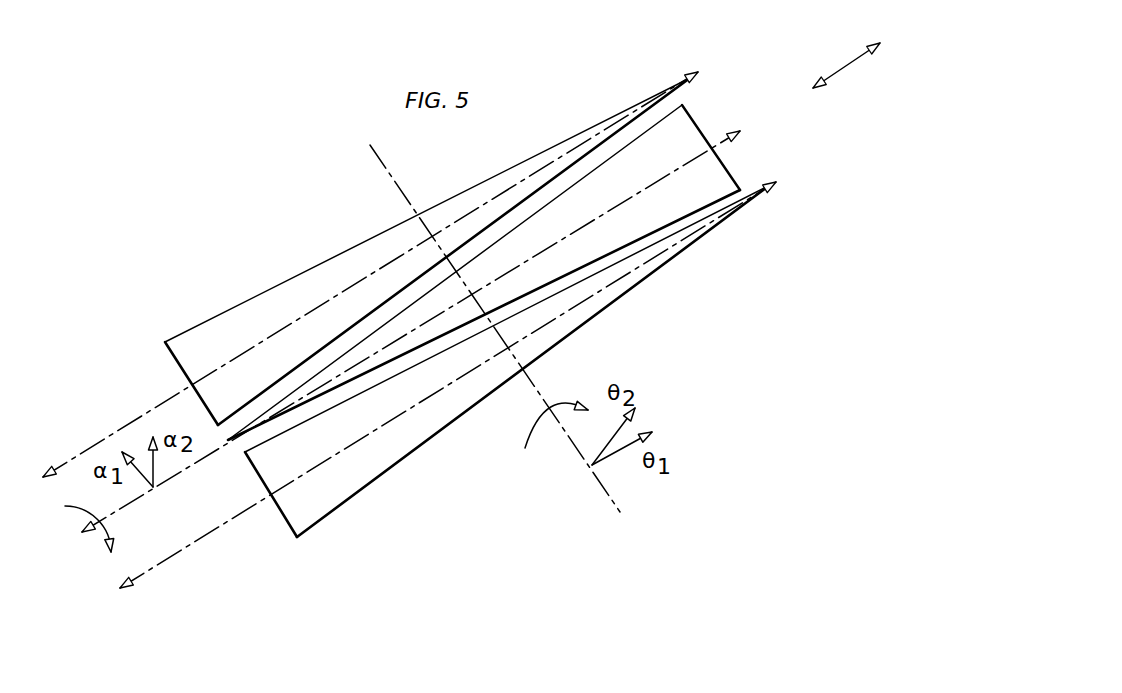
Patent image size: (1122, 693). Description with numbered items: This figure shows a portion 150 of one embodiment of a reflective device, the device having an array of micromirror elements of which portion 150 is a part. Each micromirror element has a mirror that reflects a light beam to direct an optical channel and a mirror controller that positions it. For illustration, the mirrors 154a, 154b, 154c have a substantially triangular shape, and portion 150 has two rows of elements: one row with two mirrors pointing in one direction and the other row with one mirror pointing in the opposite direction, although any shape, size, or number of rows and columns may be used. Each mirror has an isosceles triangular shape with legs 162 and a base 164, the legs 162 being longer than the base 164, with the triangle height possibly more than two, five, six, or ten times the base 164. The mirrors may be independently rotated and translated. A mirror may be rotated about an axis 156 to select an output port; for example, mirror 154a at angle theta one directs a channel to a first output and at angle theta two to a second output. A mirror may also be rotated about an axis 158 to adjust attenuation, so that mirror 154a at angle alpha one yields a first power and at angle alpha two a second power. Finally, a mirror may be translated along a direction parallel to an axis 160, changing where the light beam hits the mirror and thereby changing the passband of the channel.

The portion 150 is at (288, 175).
The mirror 154a is at (262, 291).
The mirror 154b is at (702, 122).
The mirror 154c is at (407, 456).
The axis 156 is at (610, 500).
The axis 158 is at (112, 432).
The axis 160 is at (847, 66).
The legs 162 is at (245, 452).
The base 164 is at (284, 519).